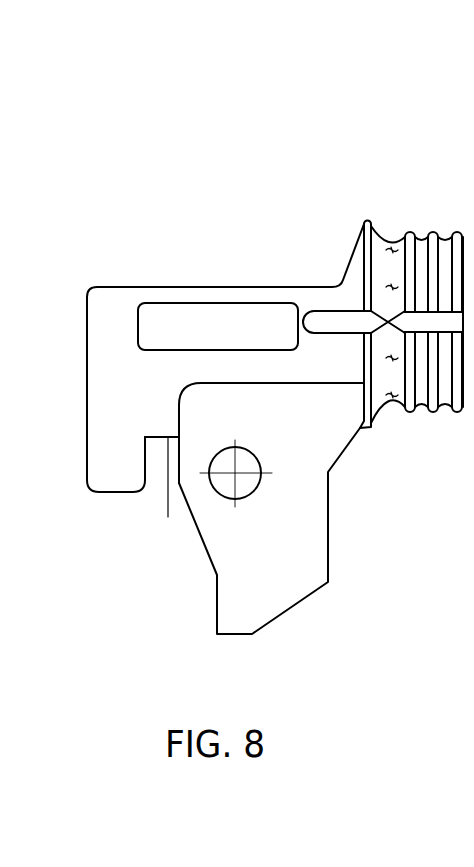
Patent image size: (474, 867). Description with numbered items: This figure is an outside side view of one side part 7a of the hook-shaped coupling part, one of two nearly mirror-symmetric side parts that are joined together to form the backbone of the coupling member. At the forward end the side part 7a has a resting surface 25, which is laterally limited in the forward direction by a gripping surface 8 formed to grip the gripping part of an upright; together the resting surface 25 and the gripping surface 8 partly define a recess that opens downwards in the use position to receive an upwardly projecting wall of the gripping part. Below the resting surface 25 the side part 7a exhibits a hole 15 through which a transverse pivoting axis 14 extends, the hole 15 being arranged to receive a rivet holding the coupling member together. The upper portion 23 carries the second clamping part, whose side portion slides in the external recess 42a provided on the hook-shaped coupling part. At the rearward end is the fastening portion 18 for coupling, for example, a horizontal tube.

The side part 7a is at (209, 133).
The upper portion 23 is at (128, 297).
The external recess 42a is at (245, 322).
The fastening portion 18 is at (416, 232).
The pivoting axis 14 is at (237, 475).
The hole 15 is at (240, 490).
The gripping surface 8 is at (147, 462).
The resting surface 25 is at (168, 517).